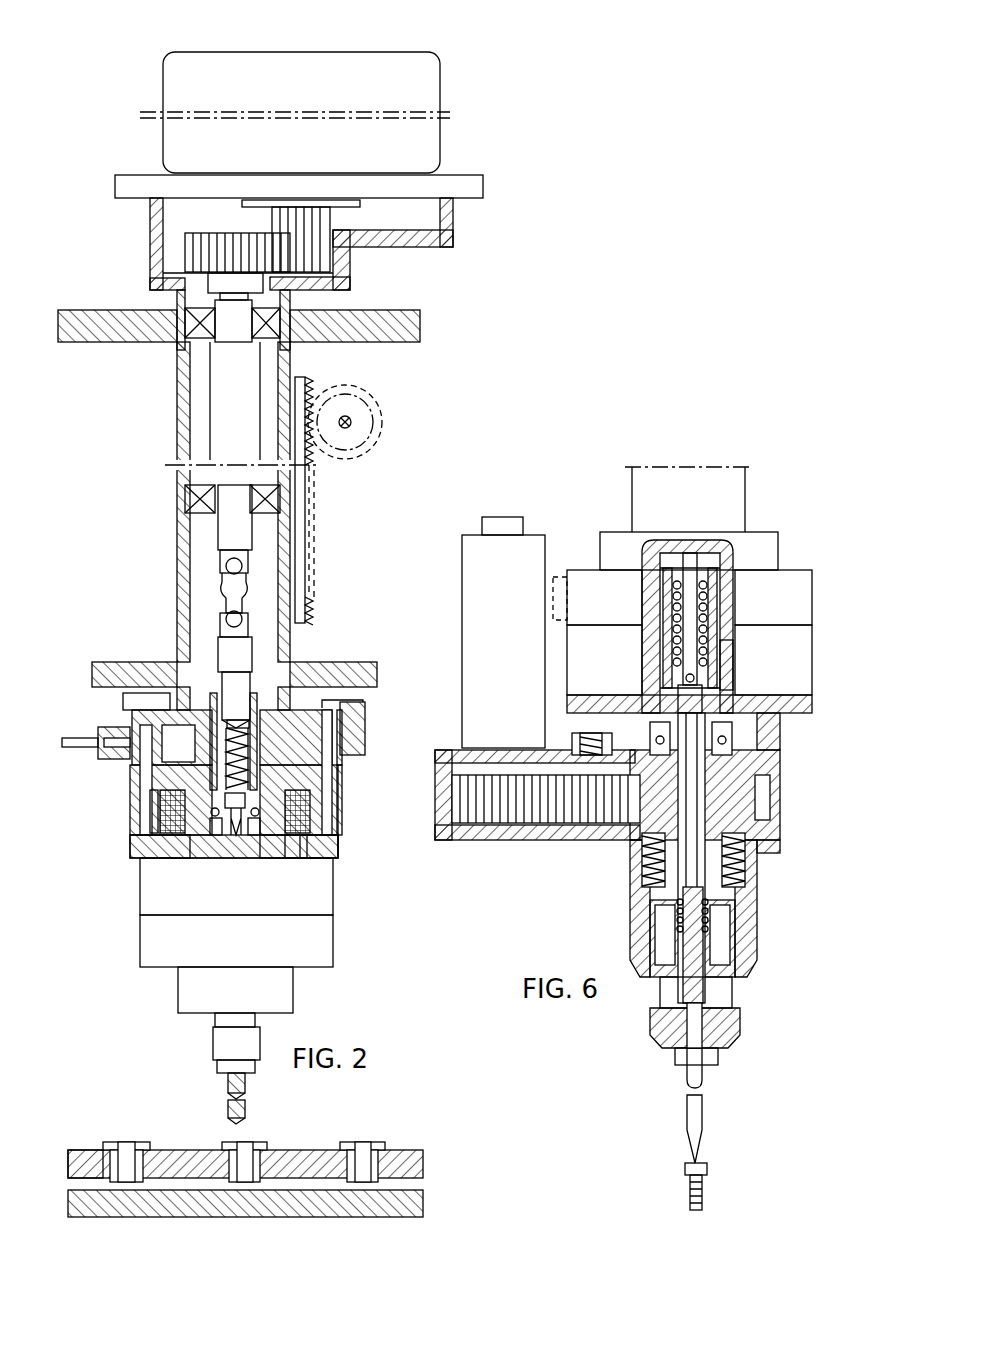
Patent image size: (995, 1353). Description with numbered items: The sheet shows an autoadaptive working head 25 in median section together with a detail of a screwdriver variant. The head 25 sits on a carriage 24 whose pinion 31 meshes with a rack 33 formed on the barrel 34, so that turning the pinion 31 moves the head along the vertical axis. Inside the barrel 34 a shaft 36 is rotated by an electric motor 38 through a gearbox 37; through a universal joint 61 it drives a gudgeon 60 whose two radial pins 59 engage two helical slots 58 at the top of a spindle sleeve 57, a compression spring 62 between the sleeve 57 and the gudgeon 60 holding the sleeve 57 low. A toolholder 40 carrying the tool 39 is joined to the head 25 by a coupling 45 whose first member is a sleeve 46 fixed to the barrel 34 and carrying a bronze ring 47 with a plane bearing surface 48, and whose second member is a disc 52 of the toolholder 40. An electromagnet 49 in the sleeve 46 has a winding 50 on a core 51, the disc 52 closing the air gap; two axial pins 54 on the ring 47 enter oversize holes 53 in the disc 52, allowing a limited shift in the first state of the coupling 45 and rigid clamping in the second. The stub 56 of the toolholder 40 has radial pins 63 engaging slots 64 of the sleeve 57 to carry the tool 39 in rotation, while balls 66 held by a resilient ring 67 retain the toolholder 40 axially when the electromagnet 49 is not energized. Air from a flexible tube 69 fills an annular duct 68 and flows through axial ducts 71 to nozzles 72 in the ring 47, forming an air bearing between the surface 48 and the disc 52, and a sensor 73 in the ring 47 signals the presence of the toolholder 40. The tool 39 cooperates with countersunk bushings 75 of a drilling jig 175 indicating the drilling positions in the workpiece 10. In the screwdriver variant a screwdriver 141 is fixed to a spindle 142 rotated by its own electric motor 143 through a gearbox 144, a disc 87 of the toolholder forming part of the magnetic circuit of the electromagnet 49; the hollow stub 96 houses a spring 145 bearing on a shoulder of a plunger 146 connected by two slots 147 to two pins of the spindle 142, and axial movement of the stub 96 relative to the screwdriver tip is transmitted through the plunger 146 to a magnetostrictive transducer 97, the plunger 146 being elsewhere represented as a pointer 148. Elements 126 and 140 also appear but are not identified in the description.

In FIG. 2, the electric motor 38 is at (428, 143).
In FIG. 2, the gearbox 37 is at (145, 247).
In FIG. 2, the barrel 34 is at (177, 413).
In FIG. 6, the barrel 34 is at (632, 489).
In FIG. 2, the shaft 36 is at (228, 530).
In FIG. 2, the rack 33 is at (312, 390).
In FIG. 2, the third pinion 31 is at (362, 415).
In FIG. 2, the working head 25 is at (335, 495).
In FIG. 6, the working head 25 is at (778, 520).
In FIG. 2, the universal joint 61 is at (255, 597).
In FIG. 2, the carriage 24 is at (342, 672).
In FIG. 2, the helical slots 58 is at (237, 717).
In FIG. 2, the radial pins 59 is at (218, 707).
In FIG. 2, the gudgeon 60 is at (245, 670).
In FIG. 2, the annular duct 68 is at (130, 740).
In FIG. 2, the flexible tube 69 is at (95, 752).
In FIG. 2, the axial ducts 71 is at (140, 786).
In FIG. 2, the resilient ring 67 is at (160, 814).
In FIG. 2, the coupling 45 is at (123, 838).
In FIG. 6, the coupling 45 is at (815, 695).
In FIG. 2, the sleeve 46 is at (337, 757).
In FIG. 6, the sleeve 46 is at (792, 582).
In FIG. 2, the bronze ring 47 is at (335, 800).
In FIG. 6, the bronze ring 47 is at (798, 655).
In FIG. 2, the compression spring 62 is at (249, 728).
In FIG. 2, the sleeve 57 is at (250, 757).
In FIG. 2, the stub or tang 56 is at (232, 810).
In FIG. 2, the axial pins 54 is at (192, 848).
In FIG. 2, the holes 53 is at (258, 813).
In FIG. 2, the radial pins 63 is at (214, 837).
In FIG. 2, the slots 64 is at (254, 823).
In FIG. 2, the balls 66 is at (236, 833).
In FIG. 2, the nozzles 72 is at (130, 843).
In FIG. 2, the sensor 73 is at (335, 843).
In FIG. 2, the electromagnet 49 is at (155, 845).
In FIG. 6, the electromagnet 49 is at (734, 660).
In FIG. 2, the winding 50 is at (170, 830).
In FIG. 2, the core 51 is at (295, 838).
In FIG. 2, the disc 52 is at (332, 852).
In FIG. 2, the plane bearing surface 48 is at (315, 848).
In FIG. 2, the toolholder 40 is at (176, 1005).
In FIG. 6, the toolholder 40 is at (785, 797).
In FIG. 2, the tool 39 is at (247, 1110).
In FIG. 2, the bushings 75 is at (373, 1140).
In FIG. 2, the drilling jig 175 is at (85, 1160).
In FIG. 2, the workpiece or part 10 is at (418, 1206).
In FIG. 6, the electric motor 143 is at (528, 539).
In FIG. 6, the block 126 is at (582, 582).
In FIG. 6, the plunger 146 is at (693, 545).
In FIG. 6, the stub or tang 96 is at (707, 575).
In FIG. 6, the magnetostrictive transducer 97 is at (690, 547).
In FIG. 6, the spring 145 is at (708, 615).
In FIG. 6, the slots 147 is at (685, 785).
In FIG. 6, the disc 87 is at (797, 713).
In FIG. 6, the gearbox 144 is at (498, 815).
In FIG. 6, the pointer 148 is at (687, 885).
In FIG. 6, the spindle 142 is at (657, 1000).
In FIG. 6, the screwdriver 141 is at (704, 1115).
In FIG. 6, the screw 140 is at (704, 1195).